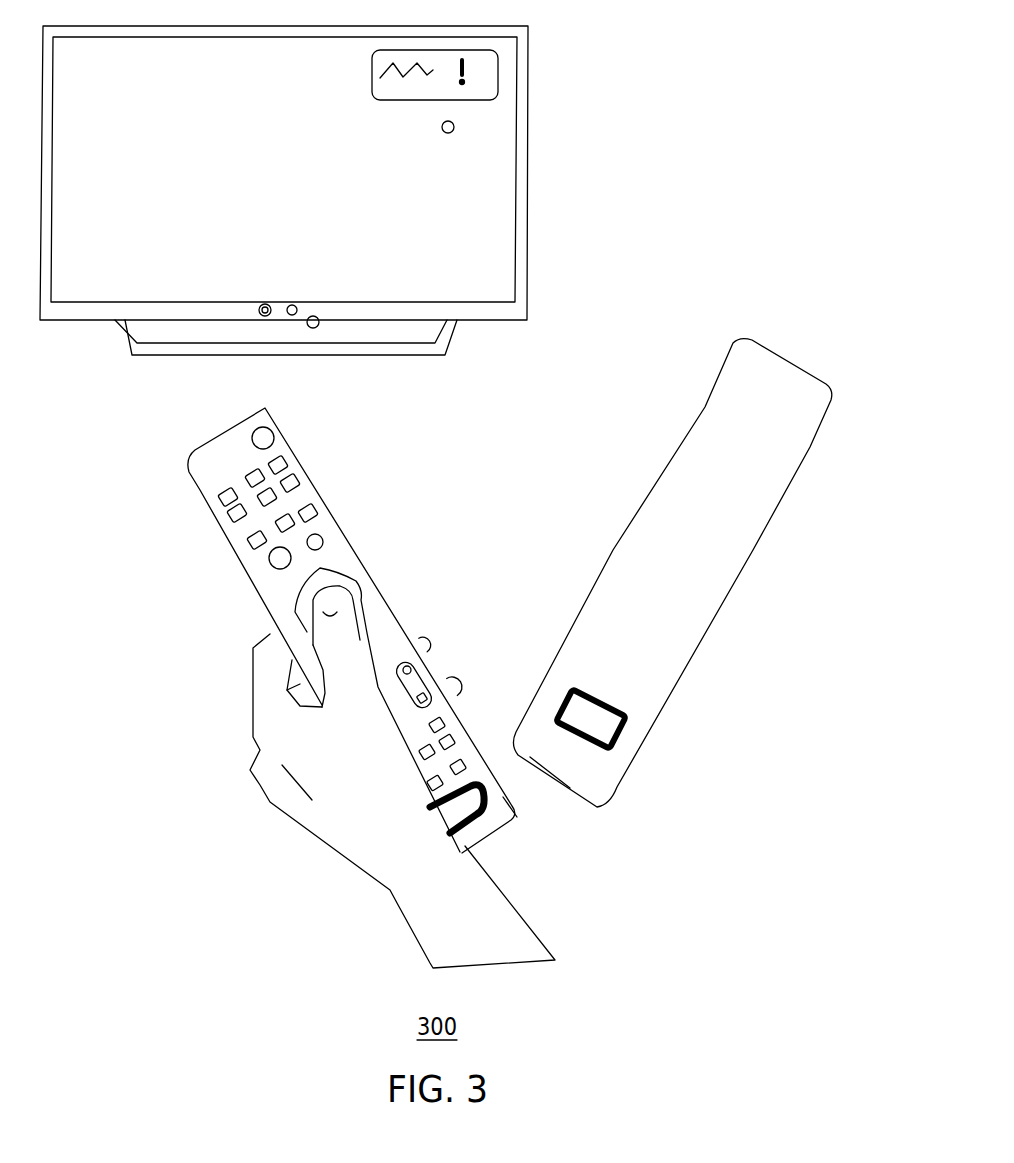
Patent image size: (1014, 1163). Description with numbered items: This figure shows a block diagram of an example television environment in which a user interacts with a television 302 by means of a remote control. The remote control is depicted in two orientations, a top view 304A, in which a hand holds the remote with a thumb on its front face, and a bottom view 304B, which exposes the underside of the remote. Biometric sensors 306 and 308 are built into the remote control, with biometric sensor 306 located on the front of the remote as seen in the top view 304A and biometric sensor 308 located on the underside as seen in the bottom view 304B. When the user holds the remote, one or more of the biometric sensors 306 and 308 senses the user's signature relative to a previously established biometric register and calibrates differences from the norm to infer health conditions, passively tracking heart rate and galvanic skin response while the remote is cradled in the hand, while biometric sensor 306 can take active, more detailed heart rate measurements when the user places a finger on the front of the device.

The television 302 is at (530, 82).
The top view of remote control 304A is at (320, 487).
The bottom view of remote control 304B is at (790, 357).
The biometric sensor 306 is at (483, 815).
The biometric sensor 308 is at (618, 740).